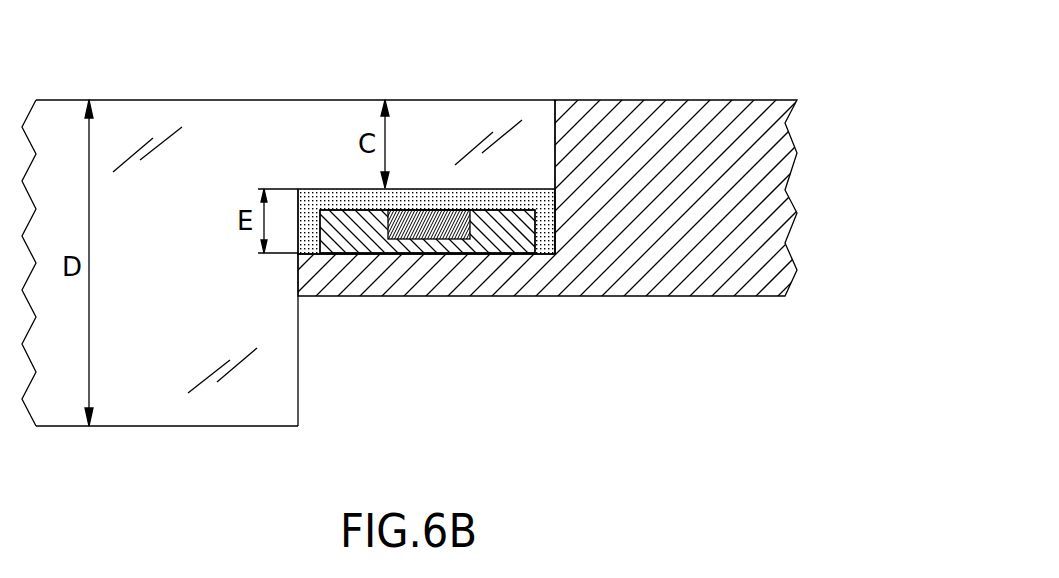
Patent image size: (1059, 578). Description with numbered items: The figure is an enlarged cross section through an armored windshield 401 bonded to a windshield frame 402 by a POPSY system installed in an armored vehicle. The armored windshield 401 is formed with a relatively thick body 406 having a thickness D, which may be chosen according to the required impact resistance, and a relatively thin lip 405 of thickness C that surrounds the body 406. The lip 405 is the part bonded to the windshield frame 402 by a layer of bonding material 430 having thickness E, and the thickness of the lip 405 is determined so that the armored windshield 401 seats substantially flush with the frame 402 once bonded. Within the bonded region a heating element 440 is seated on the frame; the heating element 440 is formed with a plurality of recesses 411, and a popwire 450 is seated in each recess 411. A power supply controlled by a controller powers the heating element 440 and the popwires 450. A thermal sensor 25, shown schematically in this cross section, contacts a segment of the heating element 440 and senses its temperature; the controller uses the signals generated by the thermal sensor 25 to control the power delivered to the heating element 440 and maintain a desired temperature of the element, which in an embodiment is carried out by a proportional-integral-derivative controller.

The armored windshield 401 is at (172, 284).
The windshield frame 402 is at (667, 230).
The lip 405 is at (425, 117).
The body 406 is at (158, 386).
The recess 411 is at (385, 230).
The thermal sensor 25 is at (433, 243).
The layer of bonding material 430 is at (553, 245).
The heating element 440 is at (508, 217).
The popwire 450 is at (432, 218).